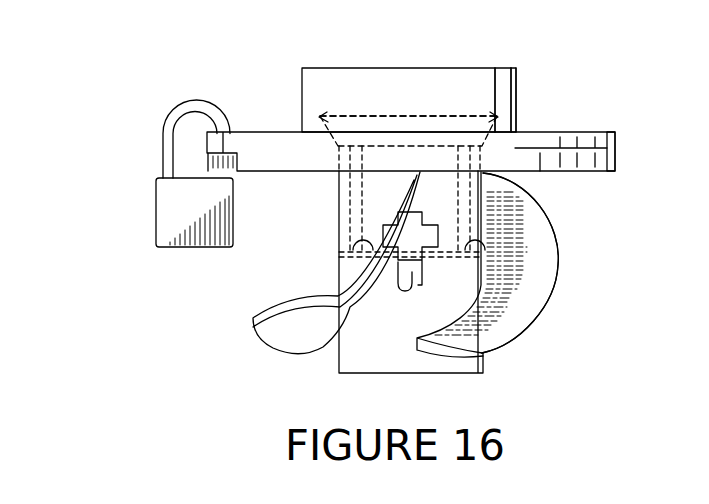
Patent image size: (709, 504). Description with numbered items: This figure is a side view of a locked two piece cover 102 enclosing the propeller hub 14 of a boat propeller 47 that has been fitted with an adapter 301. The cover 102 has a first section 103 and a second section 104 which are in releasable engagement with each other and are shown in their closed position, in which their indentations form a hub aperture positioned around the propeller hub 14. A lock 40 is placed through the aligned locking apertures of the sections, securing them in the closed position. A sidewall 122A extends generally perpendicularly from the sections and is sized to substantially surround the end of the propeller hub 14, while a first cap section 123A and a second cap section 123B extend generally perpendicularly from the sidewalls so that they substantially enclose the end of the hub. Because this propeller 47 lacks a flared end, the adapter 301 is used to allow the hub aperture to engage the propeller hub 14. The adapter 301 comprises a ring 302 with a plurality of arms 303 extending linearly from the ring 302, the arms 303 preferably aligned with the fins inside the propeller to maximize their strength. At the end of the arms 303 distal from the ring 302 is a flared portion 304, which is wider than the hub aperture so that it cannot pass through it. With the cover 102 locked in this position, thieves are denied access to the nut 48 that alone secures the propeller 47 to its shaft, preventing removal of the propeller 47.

The propeller hub 14 is at (378, 177).
The lock 40 is at (168, 212).
The boat propeller 47 is at (490, 327).
The nut 48 is at (380, 230).
The cover 102 is at (264, 143).
The first section 103 is at (600, 137).
The second section 104 is at (602, 160).
The sidewall 122A is at (502, 83).
The first cap section 123A is at (430, 68).
The second cap section 123B is at (460, 78).
The adapter 301 is at (482, 227).
The ring 302 is at (340, 243).
The arms 303 is at (468, 192).
The flared portion 304 is at (397, 121).